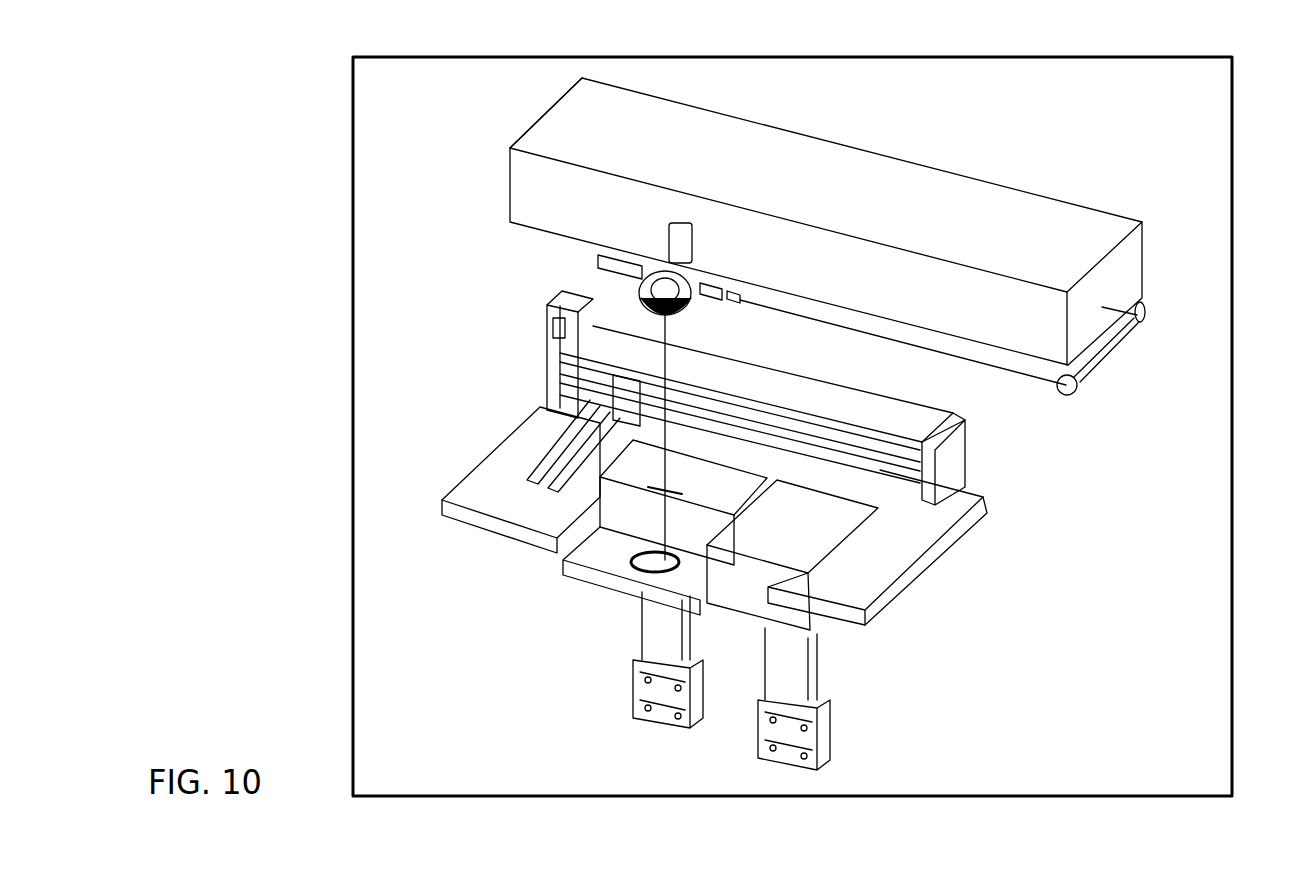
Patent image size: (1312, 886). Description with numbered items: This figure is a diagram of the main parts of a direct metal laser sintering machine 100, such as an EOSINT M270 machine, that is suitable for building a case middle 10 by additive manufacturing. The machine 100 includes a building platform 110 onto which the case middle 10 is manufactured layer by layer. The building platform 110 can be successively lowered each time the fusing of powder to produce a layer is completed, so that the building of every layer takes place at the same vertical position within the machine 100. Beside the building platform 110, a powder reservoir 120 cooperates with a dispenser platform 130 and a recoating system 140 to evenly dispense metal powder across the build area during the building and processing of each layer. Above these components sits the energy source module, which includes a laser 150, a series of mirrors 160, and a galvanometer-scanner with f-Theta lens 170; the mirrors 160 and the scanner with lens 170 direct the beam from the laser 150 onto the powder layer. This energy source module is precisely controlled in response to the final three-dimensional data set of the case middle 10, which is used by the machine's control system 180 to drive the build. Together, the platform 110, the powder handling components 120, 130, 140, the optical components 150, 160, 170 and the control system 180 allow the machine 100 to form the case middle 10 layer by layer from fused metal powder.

The DMLS machine 100 is at (353, 338).
The case middle 10 is at (625, 560).
The building platform 110 is at (650, 622).
The powder reservoir 120 is at (806, 540).
The dispenser platform 130 is at (790, 673).
The recoating system 140 is at (605, 418).
The laser 150 is at (882, 168).
The series of mirrors 160 is at (1144, 322).
The galvanometer-scanner with f-Theta lens 170 is at (640, 285).
The control system 180 is at (1310, 441).